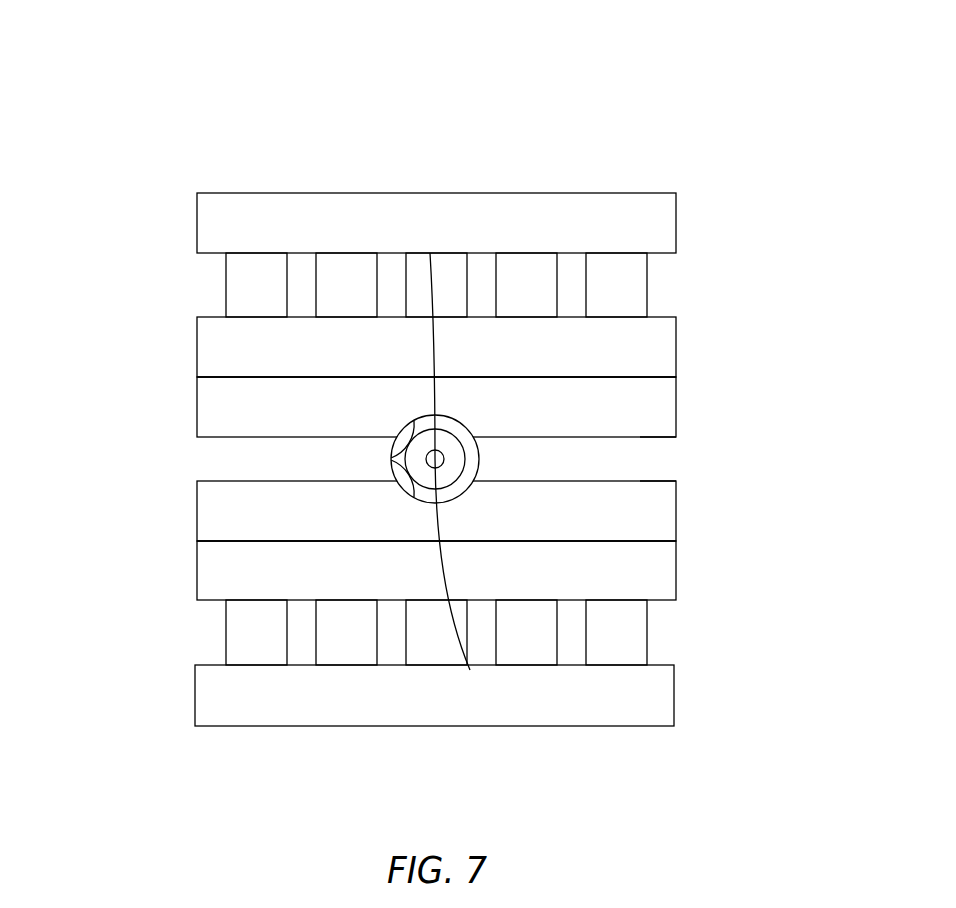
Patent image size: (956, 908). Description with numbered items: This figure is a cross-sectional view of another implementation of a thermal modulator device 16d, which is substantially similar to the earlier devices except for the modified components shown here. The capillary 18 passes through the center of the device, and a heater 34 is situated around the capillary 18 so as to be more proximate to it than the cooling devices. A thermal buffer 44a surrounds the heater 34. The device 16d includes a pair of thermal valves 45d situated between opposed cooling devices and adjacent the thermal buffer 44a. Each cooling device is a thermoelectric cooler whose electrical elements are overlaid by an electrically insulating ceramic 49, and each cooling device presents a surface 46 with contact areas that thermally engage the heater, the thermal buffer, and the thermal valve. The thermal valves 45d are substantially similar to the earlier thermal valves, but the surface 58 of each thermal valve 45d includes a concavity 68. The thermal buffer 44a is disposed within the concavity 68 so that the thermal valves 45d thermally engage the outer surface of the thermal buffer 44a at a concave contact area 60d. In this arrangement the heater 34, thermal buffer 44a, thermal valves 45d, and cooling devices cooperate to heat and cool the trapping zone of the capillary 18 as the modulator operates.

The device 16d is at (170, 79).
The thermal buffer 44a is at (407, 427).
The concave contact area 60d is at (430, 253).
The heater 34 is at (452, 436).
The capillary 18 is at (444, 458).
The electrically insulating ceramic 49 is at (196, 333).
The surface 46 is at (228, 377).
The thermal valve 45d is at (196, 423).
The surface 58 is at (643, 437).
The concavity 68 is at (392, 446).